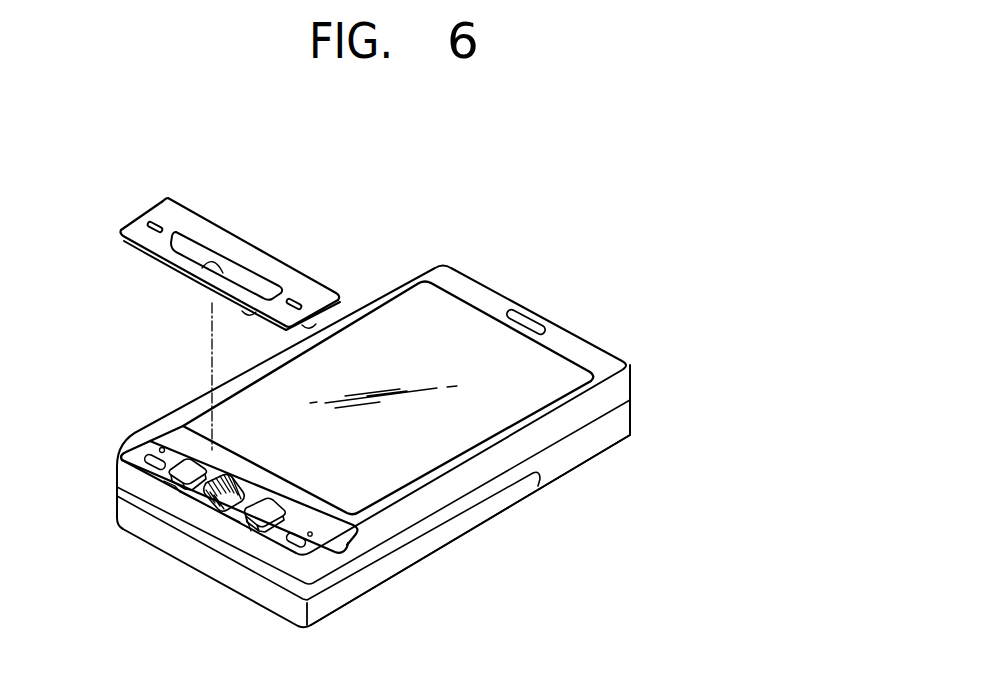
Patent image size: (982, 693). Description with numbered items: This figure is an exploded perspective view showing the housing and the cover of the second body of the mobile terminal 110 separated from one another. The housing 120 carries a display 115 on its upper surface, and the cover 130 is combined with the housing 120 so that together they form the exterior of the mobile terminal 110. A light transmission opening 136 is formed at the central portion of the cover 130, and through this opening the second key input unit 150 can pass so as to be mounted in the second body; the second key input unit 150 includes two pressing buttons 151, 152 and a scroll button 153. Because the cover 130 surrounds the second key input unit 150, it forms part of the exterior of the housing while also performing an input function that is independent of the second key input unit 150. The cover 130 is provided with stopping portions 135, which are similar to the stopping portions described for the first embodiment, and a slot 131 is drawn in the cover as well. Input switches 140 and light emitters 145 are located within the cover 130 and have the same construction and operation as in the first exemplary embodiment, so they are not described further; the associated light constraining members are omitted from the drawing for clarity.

The mobile terminal 110 is at (577, 288).
The display 115 is at (530, 396).
The housing 120 is at (453, 281).
The cover 130 is at (226, 298).
The slot 131 is at (155, 222).
The stopping portions 135 is at (312, 323).
The light transmission opening 136 is at (210, 264).
The input switches 140 is at (125, 455).
The light emitters 145 is at (159, 444).
The second key input unit 150 is at (173, 556).
The pressing button 151 is at (190, 473).
The pressing button 152 is at (238, 518).
The scroll button 153 is at (205, 497).